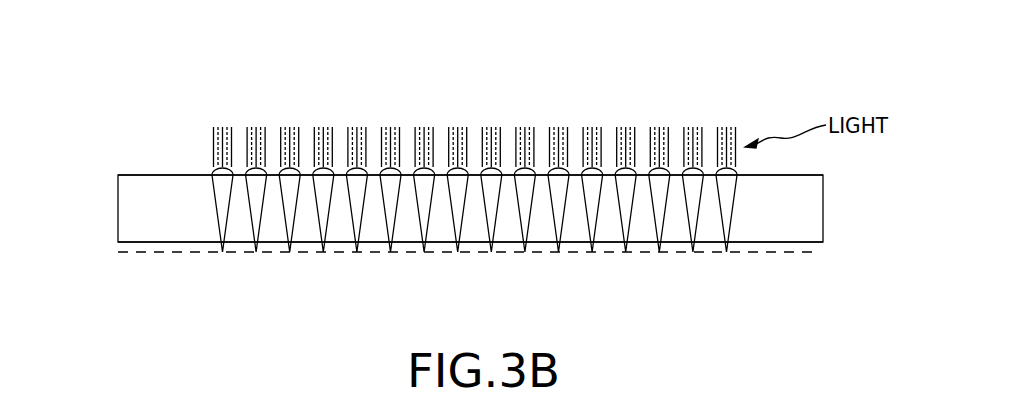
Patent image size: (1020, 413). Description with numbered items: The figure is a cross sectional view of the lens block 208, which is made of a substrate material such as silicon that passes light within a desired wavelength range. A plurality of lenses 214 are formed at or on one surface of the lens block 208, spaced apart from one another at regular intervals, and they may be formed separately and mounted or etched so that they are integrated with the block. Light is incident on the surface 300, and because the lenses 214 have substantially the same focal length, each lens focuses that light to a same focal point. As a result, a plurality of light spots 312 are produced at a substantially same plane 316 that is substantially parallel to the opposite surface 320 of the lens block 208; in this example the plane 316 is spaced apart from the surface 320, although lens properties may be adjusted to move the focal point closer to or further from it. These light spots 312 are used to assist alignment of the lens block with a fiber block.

The lens block 208 is at (810, 188).
The lenses 214 is at (752, 95).
The surface 300 is at (162, 177).
The light spots 312 is at (783, 300).
The plane 316 is at (162, 251).
The surface 320 is at (118, 242).